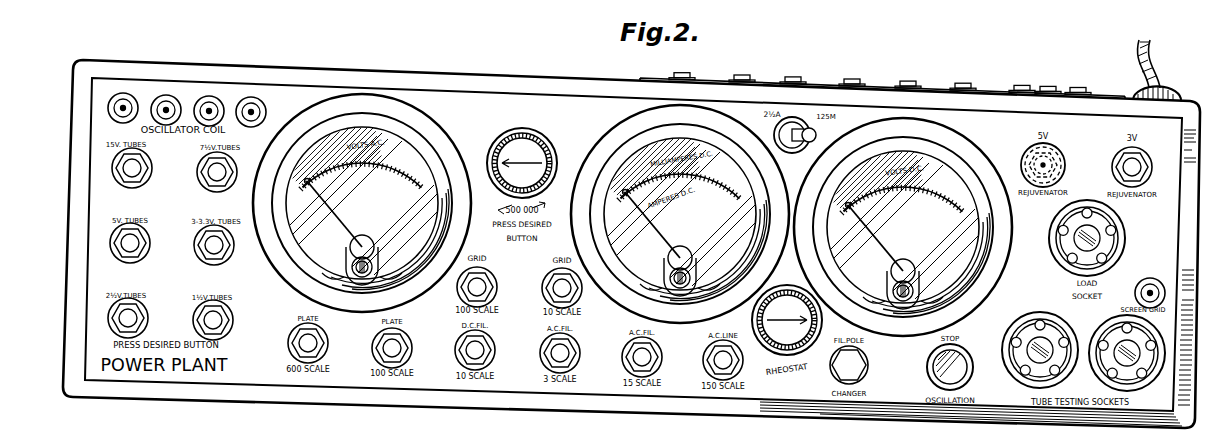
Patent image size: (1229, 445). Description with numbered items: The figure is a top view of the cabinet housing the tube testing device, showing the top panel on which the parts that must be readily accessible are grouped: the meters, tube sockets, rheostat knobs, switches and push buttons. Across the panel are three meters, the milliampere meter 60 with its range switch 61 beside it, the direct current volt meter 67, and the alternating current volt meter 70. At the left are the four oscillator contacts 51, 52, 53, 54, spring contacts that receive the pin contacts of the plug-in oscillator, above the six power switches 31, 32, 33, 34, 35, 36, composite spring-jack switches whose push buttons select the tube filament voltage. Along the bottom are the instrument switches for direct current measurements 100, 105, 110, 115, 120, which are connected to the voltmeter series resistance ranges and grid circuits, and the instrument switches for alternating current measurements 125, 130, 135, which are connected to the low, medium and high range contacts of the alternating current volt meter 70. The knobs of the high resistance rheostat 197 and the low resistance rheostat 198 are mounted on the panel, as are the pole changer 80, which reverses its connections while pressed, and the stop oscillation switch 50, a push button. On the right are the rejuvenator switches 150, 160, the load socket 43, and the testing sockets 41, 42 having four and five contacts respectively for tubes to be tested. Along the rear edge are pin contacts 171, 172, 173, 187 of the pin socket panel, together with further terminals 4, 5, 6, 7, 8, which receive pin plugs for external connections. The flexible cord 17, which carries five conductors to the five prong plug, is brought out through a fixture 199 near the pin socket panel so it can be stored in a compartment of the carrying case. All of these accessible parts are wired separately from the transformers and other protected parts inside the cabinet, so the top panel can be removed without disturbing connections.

The binding post terminal 4 is at (853, 79).
The binding post terminal 5 is at (908, 81).
The binding post terminal 6 is at (963, 83).
The binding post terminal 7 is at (1022, 85).
The binding post terminal 8 is at (1080, 87).
The flexible cord 17 is at (1152, 62).
The power switch 31 is at (233, 321).
The power switch 32 is at (148, 319).
The power switch 33 is at (229, 254).
The power switch 34 is at (146, 253).
The power switch 35 is at (224, 188).
The power switch 36 is at (146, 179).
The testing socket 41 is at (1106, 327).
The testing socket 42 is at (1025, 315).
The load socket 43 is at (1125, 238).
The stop oscillation switch 50 is at (932, 362).
The oscillator contact 51 is at (253, 97).
The oscillator contact 52 is at (210, 96).
The oscillator contact 53 is at (168, 95).
The oscillator contact 54 is at (125, 93).
The milliampere meter 60 is at (625, 124).
The range switch 61 is at (800, 121).
The direct current volt meter 67 is at (977, 152).
The alternating current volt meter 70 is at (433, 124).
The pole changer 80 is at (867, 365).
The instrument switch 100 is at (495, 350).
The instrument switch 105 is at (411, 346).
The instrument switch 110 is at (327, 345).
The instrument switch 115 is at (544, 291).
The instrument switch 120 is at (497, 282).
The instrument switch 125 is at (706, 367).
The instrument switch 130 is at (662, 355).
The instrument switch 135 is at (580, 353).
The rejuvenator switch 150 is at (1145, 159).
The rejuvenator switch 160 is at (1065, 159).
The pin contact 171 is at (686, 72).
The pin contact 172 is at (745, 75).
The pin contact 173 is at (794, 77).
The pin contact 187 is at (1048, 86).
The high resistance rheostat 197 is at (541, 140).
The low resistance rheostat 198 is at (806, 352).
The fixture 199 is at (1172, 93).